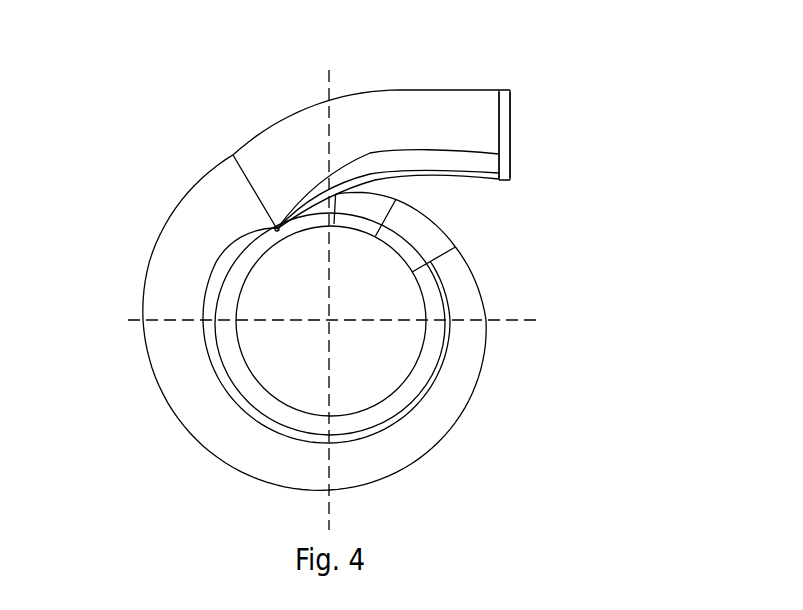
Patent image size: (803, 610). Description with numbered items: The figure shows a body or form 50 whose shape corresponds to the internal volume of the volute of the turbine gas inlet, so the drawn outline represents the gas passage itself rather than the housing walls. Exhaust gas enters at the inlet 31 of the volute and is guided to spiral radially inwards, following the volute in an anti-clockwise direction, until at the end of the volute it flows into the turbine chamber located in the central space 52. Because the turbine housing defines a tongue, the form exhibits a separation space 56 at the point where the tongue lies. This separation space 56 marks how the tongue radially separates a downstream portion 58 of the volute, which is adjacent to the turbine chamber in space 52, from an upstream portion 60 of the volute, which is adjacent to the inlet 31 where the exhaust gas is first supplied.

The form 50 is at (150, 419).
The space 52 is at (366, 351).
The separation space 56 is at (280, 227).
The downstream portion 58 is at (312, 226).
The upstream portion 60 is at (308, 151).
The inlet 31 is at (525, 147).